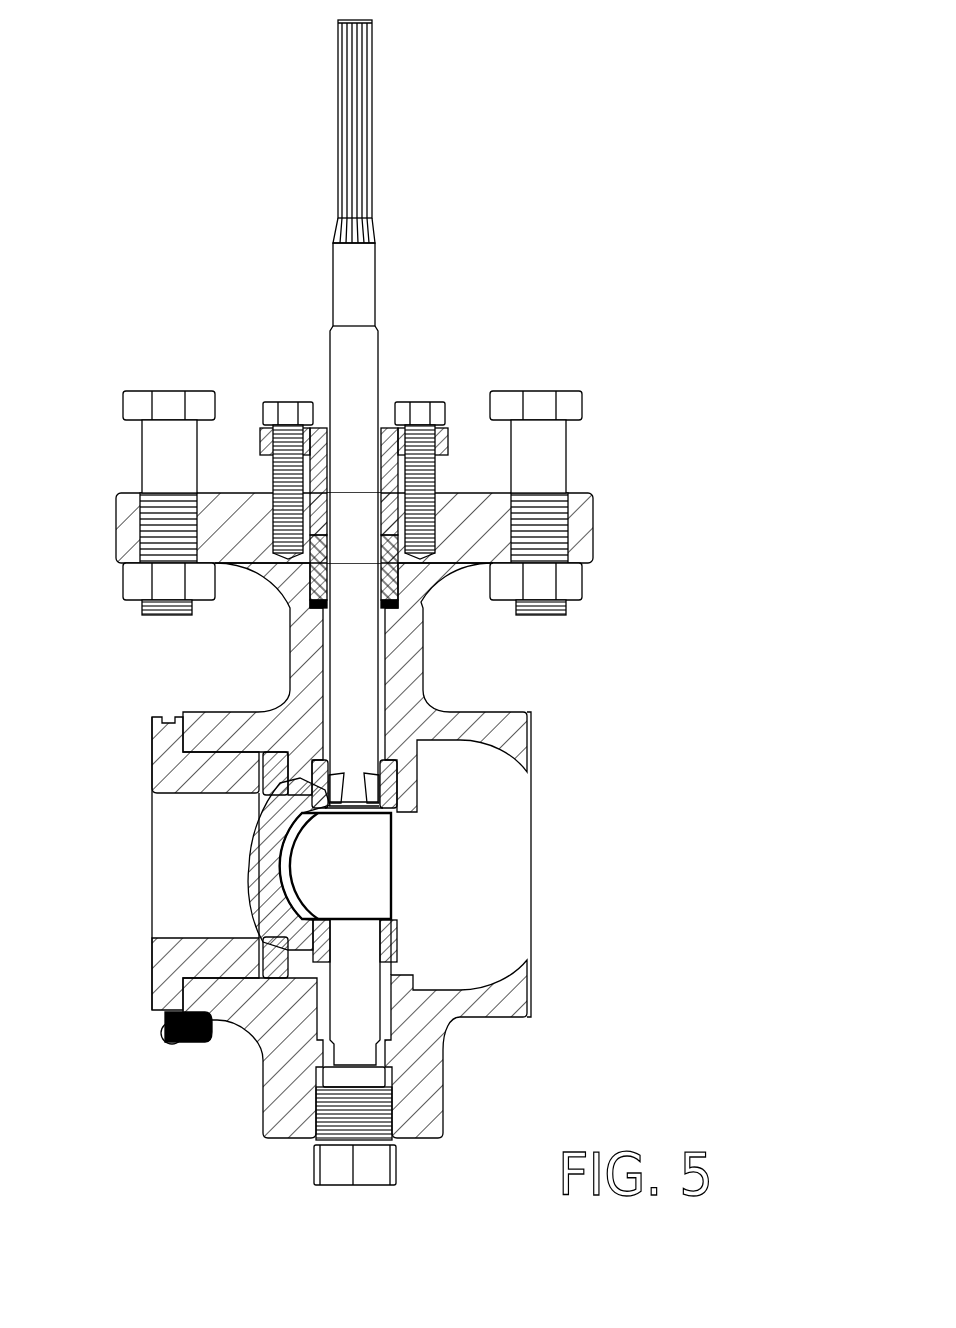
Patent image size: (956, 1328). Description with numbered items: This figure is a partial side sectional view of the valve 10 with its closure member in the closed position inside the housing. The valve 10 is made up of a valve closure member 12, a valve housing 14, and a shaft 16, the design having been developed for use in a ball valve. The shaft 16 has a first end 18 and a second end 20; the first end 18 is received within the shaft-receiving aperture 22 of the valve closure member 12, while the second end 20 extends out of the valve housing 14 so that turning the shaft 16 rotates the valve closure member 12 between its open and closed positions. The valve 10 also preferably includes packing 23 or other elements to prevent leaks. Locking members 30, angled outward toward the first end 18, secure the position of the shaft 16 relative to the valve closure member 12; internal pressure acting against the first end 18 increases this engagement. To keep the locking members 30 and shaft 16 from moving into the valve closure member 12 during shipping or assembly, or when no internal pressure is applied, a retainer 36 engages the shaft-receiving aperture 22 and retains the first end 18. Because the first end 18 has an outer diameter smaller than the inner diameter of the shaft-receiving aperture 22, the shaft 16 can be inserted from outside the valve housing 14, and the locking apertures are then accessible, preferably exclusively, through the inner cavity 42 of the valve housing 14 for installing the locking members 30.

The valve 10 is at (183, 275).
The valve closure member 12 is at (250, 875).
The valve housing 14 is at (490, 730).
The shaft 16 is at (443, 411).
The first end 18 is at (237, 757).
The second end 20 is at (373, 23).
The shaft-receiving aperture 22 is at (398, 790).
The packing 23 is at (437, 556).
The locking member 30 is at (265, 800).
The retainer 36 is at (357, 860).
The inner cavity 42 is at (413, 815).